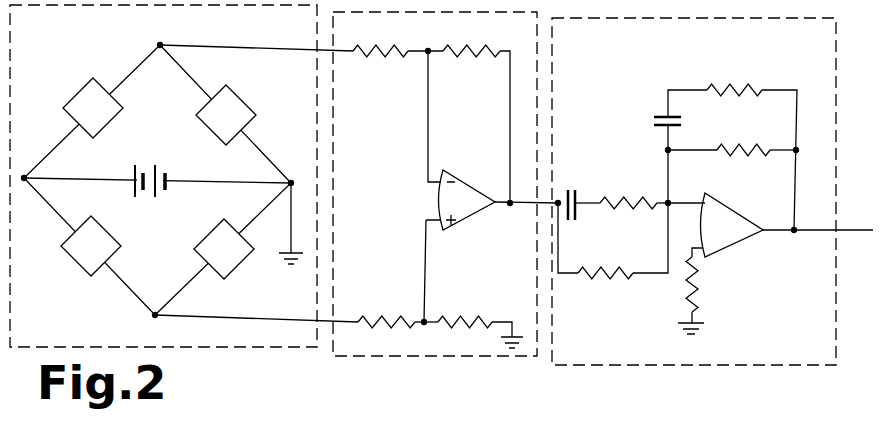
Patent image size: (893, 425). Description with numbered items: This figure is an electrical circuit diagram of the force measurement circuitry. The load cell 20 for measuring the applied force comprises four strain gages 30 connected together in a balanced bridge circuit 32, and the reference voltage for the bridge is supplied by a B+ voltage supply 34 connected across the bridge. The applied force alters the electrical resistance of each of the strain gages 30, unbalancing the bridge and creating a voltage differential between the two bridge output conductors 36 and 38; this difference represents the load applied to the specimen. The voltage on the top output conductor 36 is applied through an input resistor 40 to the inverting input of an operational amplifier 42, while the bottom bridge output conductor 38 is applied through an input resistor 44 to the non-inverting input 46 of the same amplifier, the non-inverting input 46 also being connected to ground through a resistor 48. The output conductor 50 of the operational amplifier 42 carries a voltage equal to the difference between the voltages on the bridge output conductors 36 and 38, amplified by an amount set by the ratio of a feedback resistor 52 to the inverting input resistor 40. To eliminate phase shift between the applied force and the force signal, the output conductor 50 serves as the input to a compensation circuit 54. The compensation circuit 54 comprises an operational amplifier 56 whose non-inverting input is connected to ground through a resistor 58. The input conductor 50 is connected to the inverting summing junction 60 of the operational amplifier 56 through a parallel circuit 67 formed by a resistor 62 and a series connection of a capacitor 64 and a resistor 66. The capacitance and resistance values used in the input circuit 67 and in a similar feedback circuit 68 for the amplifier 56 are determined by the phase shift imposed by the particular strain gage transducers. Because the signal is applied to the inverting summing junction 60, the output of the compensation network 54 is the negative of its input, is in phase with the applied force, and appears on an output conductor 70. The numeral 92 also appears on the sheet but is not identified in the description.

The load cell 20 is at (202, 349).
The strain gages 30 is at (119, 112).
The balanced bridge circuit 32 is at (133, 54).
The B+ voltage supply 34 is at (162, 197).
The top bridge output conductor 36 is at (260, 49).
The bottom bridge output conductor 38 is at (268, 318).
The input resistor 40 is at (390, 56).
The operational amplifier 42 is at (471, 183).
The input resistor 44 is at (378, 318).
The non-inverting input 46 is at (425, 278).
The resistor 48 is at (466, 317).
The output conductor 50 is at (518, 205).
The feedback resistor 52 is at (480, 57).
The compensation circuit 54 is at (772, 360).
The operational amplifier 56 is at (738, 242).
The resistor 58 is at (694, 287).
The inverting summing junction 60 is at (668, 203).
The resistor 62 is at (612, 276).
The capacitor 64 is at (583, 191).
The resistor 66 is at (636, 197).
The parallel circuit 67 is at (580, 284).
The feedback circuit 68 is at (775, 86).
The output conductor 70 is at (855, 229).
The output signal 92 is at (647, 417).